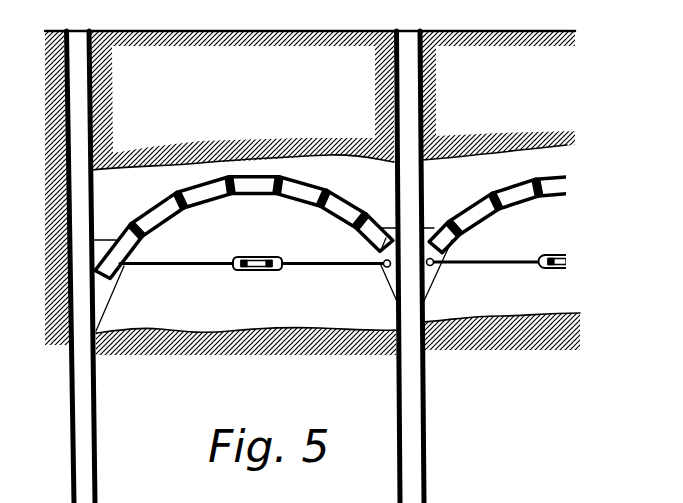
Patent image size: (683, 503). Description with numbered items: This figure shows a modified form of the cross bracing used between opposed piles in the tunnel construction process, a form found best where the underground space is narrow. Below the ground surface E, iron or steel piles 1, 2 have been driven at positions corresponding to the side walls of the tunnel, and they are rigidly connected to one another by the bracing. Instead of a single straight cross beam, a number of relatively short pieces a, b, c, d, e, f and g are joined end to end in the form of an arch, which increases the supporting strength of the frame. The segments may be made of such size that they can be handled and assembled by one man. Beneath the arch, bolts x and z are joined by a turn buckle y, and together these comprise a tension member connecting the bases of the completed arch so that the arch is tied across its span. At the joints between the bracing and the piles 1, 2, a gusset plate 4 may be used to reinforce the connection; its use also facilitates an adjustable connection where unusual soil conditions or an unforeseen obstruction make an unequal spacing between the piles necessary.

The pile 1 is at (93, 398).
The pile 2 is at (418, 388).
The gusset plate 4 is at (117, 283).
The ground surface E is at (188, 32).
The short piece a is at (127, 243).
The short piece b is at (163, 219).
The short piece c is at (210, 202).
The short piece d is at (250, 192).
The short piece e is at (296, 205).
The short piece f is at (329, 216).
The short piece g is at (352, 234).
The bolt x is at (188, 268).
The turn buckle y is at (253, 272).
The bolt z is at (322, 268).